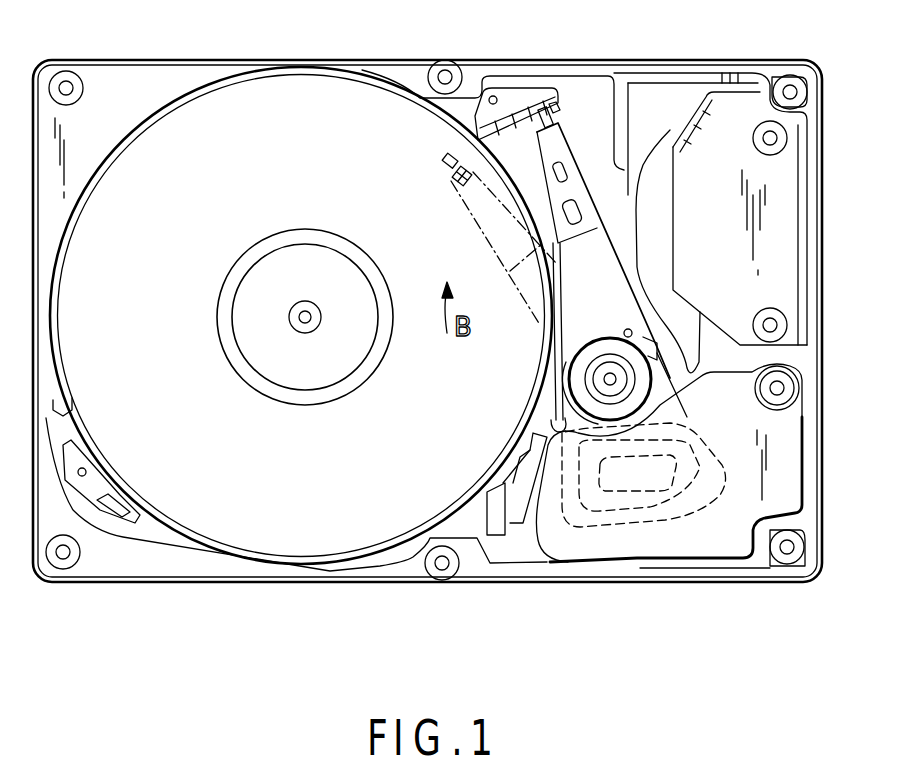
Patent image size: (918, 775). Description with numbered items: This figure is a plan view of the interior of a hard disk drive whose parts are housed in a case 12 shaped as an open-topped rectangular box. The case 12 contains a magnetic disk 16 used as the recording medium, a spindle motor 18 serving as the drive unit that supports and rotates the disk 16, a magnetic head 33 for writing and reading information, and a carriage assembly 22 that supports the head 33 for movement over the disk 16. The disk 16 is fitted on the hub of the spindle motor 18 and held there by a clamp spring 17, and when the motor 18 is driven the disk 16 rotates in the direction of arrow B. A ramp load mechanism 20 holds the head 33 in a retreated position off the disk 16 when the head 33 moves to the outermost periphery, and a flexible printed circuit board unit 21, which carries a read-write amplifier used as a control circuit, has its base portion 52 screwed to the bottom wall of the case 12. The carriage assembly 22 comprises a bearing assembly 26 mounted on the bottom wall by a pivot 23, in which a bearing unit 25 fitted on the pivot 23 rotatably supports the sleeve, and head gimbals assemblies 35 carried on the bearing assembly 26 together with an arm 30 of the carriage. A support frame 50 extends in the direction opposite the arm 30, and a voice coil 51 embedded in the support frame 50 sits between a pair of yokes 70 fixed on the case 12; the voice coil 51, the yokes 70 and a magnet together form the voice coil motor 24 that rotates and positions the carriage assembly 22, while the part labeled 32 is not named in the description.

The case 12 is at (140, 70).
The magnetic disk 16 is at (315, 83).
The clamp spring 17 is at (313, 380).
The spindle motor 18 is at (196, 331).
The ramp load mechanism 20 is at (502, 76).
The flexible printed circuit board unit 21 is at (718, 108).
The carriage assembly 22 is at (608, 210).
The pivot 23 is at (610, 378).
The voice coil motor 24 is at (546, 471).
The bearing unit 25 is at (597, 368).
The bearing assembly 26 is at (580, 386).
The arm 30 is at (601, 290).
The arm 32 is at (562, 152).
The magnetic head 33 is at (452, 183).
The head gimbals assembly 35 is at (622, 249).
The support frame 50 is at (713, 453).
The voice coil 51 is at (623, 497).
The base portion 52 is at (785, 265).
The yoke 70 is at (783, 453).